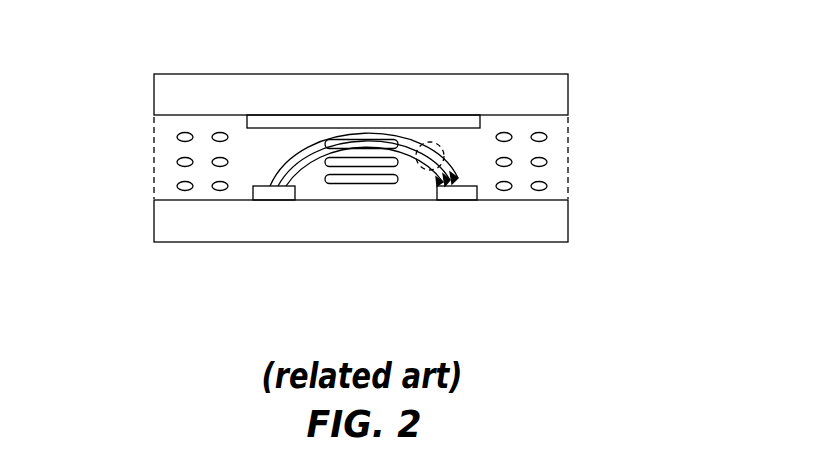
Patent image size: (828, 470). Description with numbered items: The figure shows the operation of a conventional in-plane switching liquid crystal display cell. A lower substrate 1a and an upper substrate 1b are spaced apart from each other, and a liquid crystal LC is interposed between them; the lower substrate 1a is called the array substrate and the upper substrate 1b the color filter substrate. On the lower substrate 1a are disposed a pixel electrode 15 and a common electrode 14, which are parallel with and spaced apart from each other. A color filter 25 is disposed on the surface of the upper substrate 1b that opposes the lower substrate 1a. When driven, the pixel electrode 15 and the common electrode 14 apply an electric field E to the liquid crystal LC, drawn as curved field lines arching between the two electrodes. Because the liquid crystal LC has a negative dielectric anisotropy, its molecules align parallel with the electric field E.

The lower substrate 1a is at (490, 228).
The upper substrate 1b is at (315, 85).
The color filter 25 is at (273, 126).
The pixel electrode 15 is at (266, 198).
The common electrode 14 is at (453, 190).
The liquid crystal LC is at (352, 184).
The electric field E is at (437, 143).